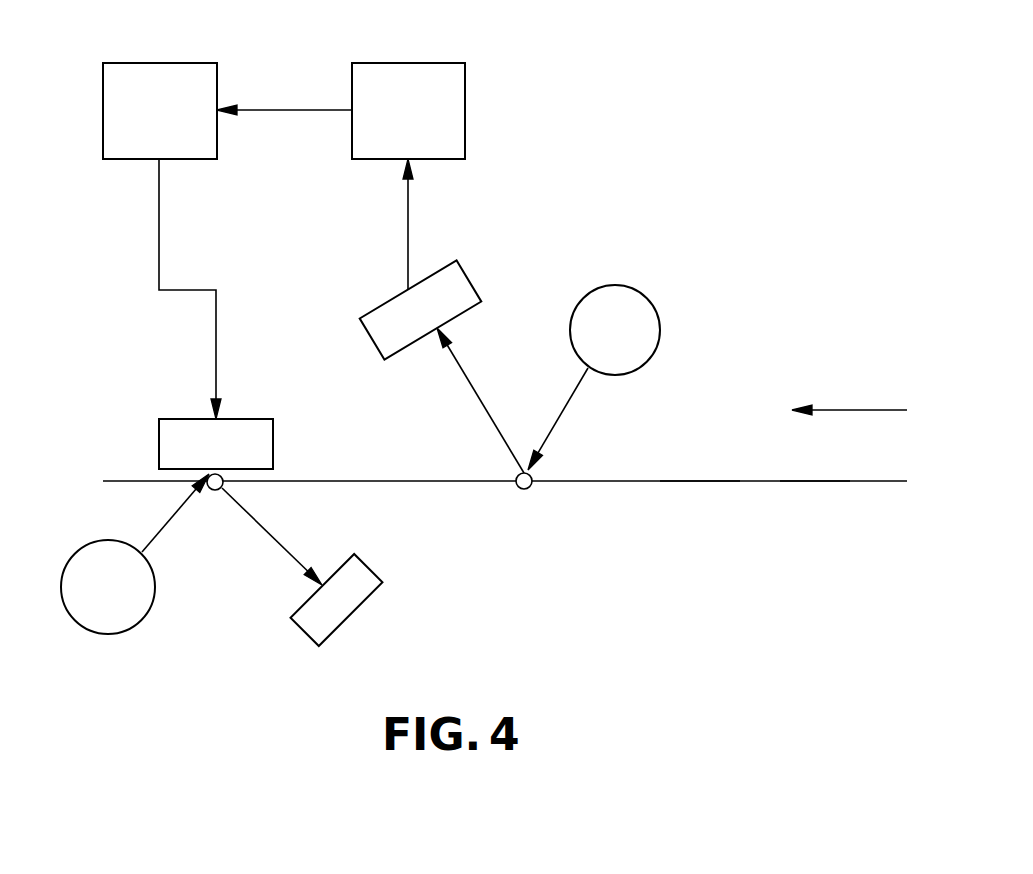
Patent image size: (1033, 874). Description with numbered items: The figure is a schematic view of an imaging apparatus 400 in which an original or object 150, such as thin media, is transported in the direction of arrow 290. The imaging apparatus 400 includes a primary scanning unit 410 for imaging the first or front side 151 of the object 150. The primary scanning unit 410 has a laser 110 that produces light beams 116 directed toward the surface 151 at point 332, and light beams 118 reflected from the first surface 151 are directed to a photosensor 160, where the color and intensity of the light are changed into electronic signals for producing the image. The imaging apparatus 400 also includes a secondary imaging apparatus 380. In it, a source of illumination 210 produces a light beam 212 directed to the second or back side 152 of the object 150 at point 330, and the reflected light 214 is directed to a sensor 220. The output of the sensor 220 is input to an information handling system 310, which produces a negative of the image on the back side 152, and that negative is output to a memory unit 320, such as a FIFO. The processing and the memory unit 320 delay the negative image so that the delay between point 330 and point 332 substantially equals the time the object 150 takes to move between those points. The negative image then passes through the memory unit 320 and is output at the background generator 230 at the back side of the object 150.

The laser 110 is at (74, 555).
The light beams 116 is at (172, 521).
The reflected light beams 118 is at (276, 531).
The object 150 is at (746, 481).
The first side 151 is at (675, 483).
The second side 152 is at (791, 481).
The photosensor 160 is at (372, 565).
The source of illumination 210 is at (614, 284).
The light beam 212 is at (561, 414).
The reflected light 214 is at (476, 405).
The sensor 220 is at (468, 270).
The background generator 230 is at (274, 443).
The arrow 290 is at (848, 410).
The information handling system 310 is at (408, 63).
The memory unit 320 is at (161, 63).
The point 330 is at (523, 490).
The point 332 is at (215, 491).
The secondary imaging apparatus 380 is at (103, 200).
The imaging apparatus 400 is at (662, 83).
The primary scanning unit 410 is at (435, 611).